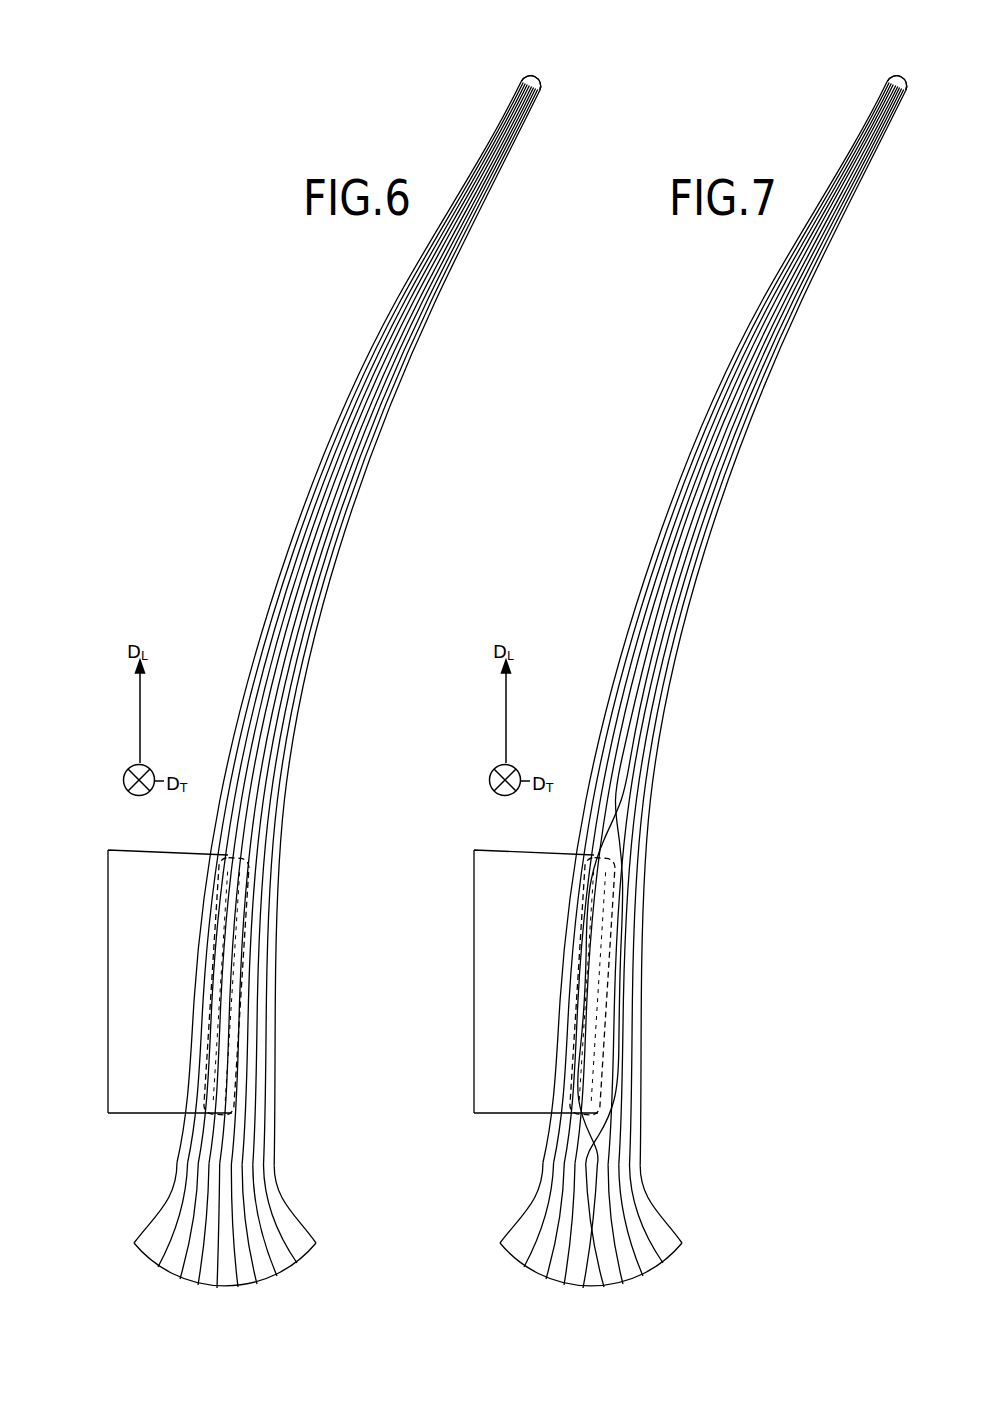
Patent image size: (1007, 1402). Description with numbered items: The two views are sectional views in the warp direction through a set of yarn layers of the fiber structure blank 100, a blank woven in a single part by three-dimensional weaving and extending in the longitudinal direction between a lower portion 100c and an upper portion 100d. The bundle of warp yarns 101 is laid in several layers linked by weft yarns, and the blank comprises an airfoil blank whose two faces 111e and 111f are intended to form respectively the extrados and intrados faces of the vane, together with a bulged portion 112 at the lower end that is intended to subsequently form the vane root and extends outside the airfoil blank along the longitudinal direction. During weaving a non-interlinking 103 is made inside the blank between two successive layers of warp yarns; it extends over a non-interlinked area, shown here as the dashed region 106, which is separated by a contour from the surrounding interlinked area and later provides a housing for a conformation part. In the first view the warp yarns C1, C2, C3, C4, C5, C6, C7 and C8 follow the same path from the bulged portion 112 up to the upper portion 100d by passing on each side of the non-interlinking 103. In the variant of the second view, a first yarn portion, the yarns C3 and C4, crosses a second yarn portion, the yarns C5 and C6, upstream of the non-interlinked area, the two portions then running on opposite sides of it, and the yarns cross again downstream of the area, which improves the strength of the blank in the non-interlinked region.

In FIG. 6, the fiber structure blank 100 is at (293, 440).
In FIG. 7, the fiber structure blank 100 is at (680, 694).
In FIG. 6, the lower portion 100c is at (228, 1292).
In FIG. 7, the lower portion 100c is at (591, 1299).
In FIG. 6, the upper portion 100d is at (536, 79).
In FIG. 7, the upper portion 100d is at (912, 61).
In FIG. 6, the warp yarns 101 is at (163, 1215).
In FIG. 7, the warp yarns 101 is at (504, 1203).
In FIG. 6, the non-interlinking 103 is at (145, 981).
In FIG. 7, the non-interlinking 103 is at (511, 981).
In FIG. 6, the reinforcement insert 106 is at (231, 1005).
In FIG. 7, the reinforcement insert 106 is at (637, 986).
In FIG. 6, the extrados face 111e is at (272, 588).
In FIG. 7, the extrados face 111e is at (715, 622).
In FIG. 6, the intrados face 111f is at (333, 590).
In FIG. 7, the intrados face 111f is at (773, 628).
In FIG. 6, the bulged portion 112 is at (293, 1199).
In FIG. 7, the bulged portion 112 is at (676, 1205).
In FIG. 6, the warp yarn C1 is at (156, 1262).
In FIG. 7, the warp yarn C1 is at (511, 1223).
In FIG. 6, the warp yarn C2 is at (178, 1276).
In FIG. 7, the warp yarn C2 is at (529, 1233).
In FIG. 6, the warp yarn C3 is at (196, 1283).
In FIG. 7, the warp yarn C3 is at (546, 1243).
In FIG. 6, the warp yarn C4 is at (216, 1287).
In FIG. 7, the warp yarn C4 is at (576, 1247).
In FIG. 6, the warp yarn C5 is at (239, 1285).
In FIG. 7, the warp yarn C5 is at (607, 1246).
In FIG. 6, the warp yarn C6 is at (258, 1281).
In FIG. 7, the warp yarn C6 is at (634, 1242).
In FIG. 6, the warp yarn C7 is at (279, 1273).
In FIG. 7, the warp yarn C7 is at (653, 1234).
In FIG. 6, the warp yarn C8 is at (299, 1261).
In FIG. 7, the warp yarn C8 is at (671, 1224).